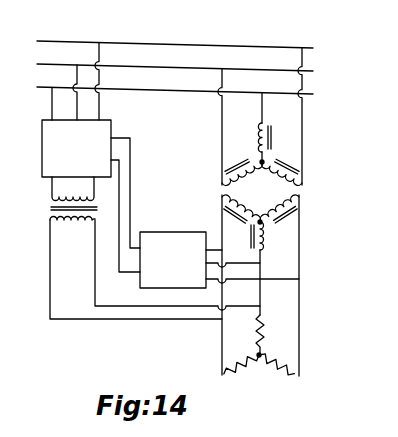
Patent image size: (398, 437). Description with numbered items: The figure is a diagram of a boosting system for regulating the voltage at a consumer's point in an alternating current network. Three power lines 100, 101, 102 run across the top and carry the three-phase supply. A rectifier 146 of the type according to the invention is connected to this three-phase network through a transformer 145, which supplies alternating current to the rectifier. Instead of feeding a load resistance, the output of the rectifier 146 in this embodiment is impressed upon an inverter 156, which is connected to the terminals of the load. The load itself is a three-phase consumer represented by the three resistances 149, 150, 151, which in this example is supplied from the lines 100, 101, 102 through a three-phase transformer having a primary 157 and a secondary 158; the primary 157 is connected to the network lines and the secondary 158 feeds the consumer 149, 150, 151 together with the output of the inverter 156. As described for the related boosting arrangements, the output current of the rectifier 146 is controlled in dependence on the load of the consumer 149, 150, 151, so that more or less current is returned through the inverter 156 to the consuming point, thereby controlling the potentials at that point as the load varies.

The line 100 is at (191, 94).
The line 101 is at (191, 70).
The line 102 is at (191, 47).
The transformer 145 is at (54, 203).
The rectifier 146 is at (42, 157).
The consumer 149 is at (262, 345).
The consumer 150 is at (245, 372).
The consumer 151 is at (273, 372).
The inverter 156 is at (169, 232).
The primary 157 is at (272, 188).
The secondary 158 is at (290, 239).